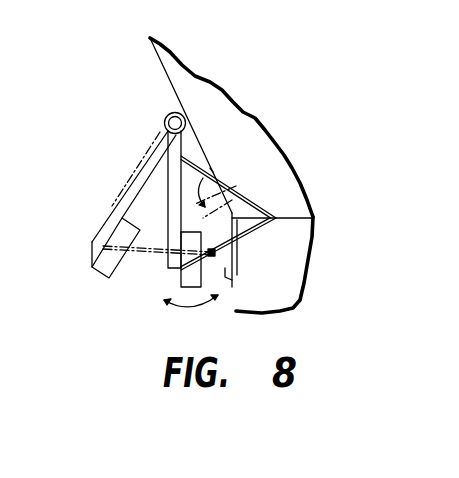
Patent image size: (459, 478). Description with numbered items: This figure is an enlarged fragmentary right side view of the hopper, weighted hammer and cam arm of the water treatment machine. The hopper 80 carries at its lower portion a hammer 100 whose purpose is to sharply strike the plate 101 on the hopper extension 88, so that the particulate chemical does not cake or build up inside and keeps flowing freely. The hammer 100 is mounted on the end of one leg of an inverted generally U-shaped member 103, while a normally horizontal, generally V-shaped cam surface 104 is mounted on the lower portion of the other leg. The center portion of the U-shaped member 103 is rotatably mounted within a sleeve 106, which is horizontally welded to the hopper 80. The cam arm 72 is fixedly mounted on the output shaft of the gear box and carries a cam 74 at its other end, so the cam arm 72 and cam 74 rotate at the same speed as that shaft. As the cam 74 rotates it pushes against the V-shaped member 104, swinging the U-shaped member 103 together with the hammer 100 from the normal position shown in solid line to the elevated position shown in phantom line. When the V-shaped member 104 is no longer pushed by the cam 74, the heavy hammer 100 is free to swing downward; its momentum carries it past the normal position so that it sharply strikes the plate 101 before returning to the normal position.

The cam arm 72 is at (236, 186).
The cam 74 is at (210, 168).
The hopper 80 is at (218, 98).
The hopper extension 88 is at (299, 260).
The hammer 100 is at (198, 283).
The plate 101 is at (233, 282).
The inverted generally U-shaped member 103 is at (140, 168).
The V-shaped cam surface 104 is at (242, 233).
The sleeve 106 is at (165, 118).